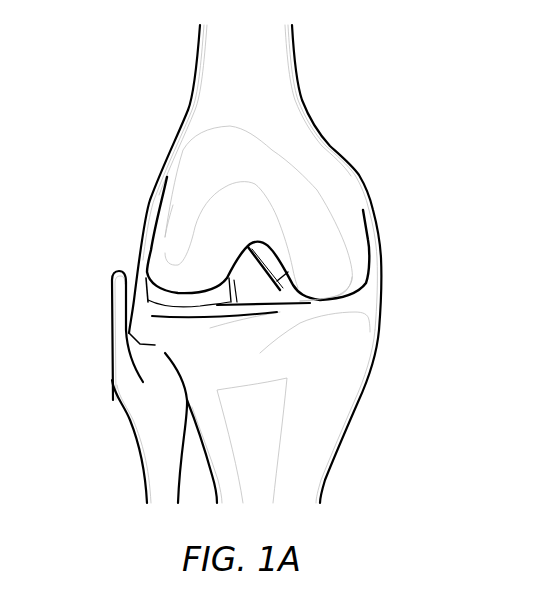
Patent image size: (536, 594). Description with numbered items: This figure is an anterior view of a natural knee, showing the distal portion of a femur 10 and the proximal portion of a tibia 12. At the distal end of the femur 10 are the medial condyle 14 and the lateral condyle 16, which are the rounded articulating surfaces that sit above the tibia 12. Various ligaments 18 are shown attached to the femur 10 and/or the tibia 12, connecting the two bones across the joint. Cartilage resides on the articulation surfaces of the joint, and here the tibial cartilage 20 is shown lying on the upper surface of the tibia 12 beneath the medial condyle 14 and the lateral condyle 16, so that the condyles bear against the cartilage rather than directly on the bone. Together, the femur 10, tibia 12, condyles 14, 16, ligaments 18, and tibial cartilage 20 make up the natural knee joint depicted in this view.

The femur 10 is at (370, 187).
The tibia 12 is at (375, 377).
The medial condyle 14 is at (332, 257).
The lateral condyle 16 is at (187, 226).
The ligaments 18 is at (267, 258).
The tibial cartilage 20 is at (167, 301).